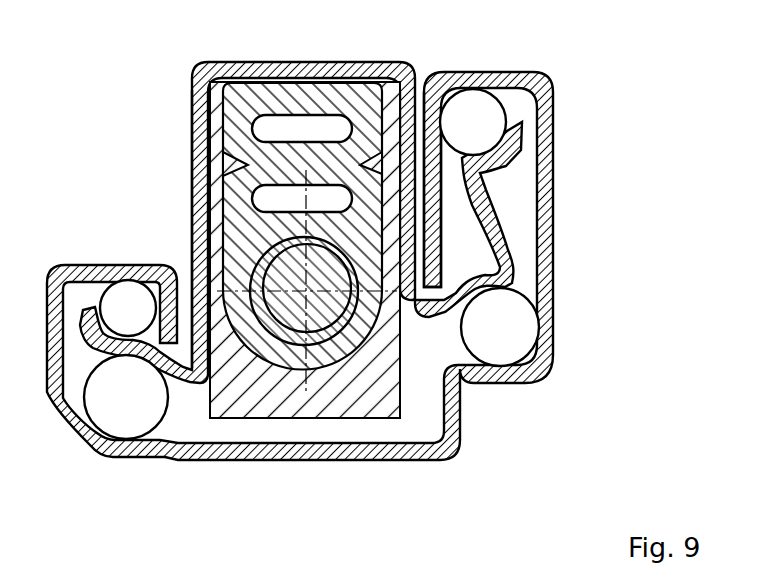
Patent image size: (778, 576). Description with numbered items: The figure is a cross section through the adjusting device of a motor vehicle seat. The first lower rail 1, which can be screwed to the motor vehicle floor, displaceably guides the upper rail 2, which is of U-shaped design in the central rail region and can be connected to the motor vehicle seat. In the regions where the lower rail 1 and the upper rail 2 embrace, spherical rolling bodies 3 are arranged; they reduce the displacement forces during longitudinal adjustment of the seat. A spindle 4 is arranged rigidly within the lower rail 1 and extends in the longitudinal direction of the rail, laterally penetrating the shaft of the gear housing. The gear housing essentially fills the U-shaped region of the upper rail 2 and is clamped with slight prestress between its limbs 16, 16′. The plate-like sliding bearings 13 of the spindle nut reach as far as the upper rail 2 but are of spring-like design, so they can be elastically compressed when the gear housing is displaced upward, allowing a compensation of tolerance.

The lower rail 1 is at (387, 452).
The upper rail 2 is at (301, 194).
The spherical rolling bodies 3 is at (487, 110).
The spindle 4 is at (293, 307).
The sliding bearings 13 is at (282, 97).
The limb 16 is at (192, 216).
The limb 16′ is at (415, 152).